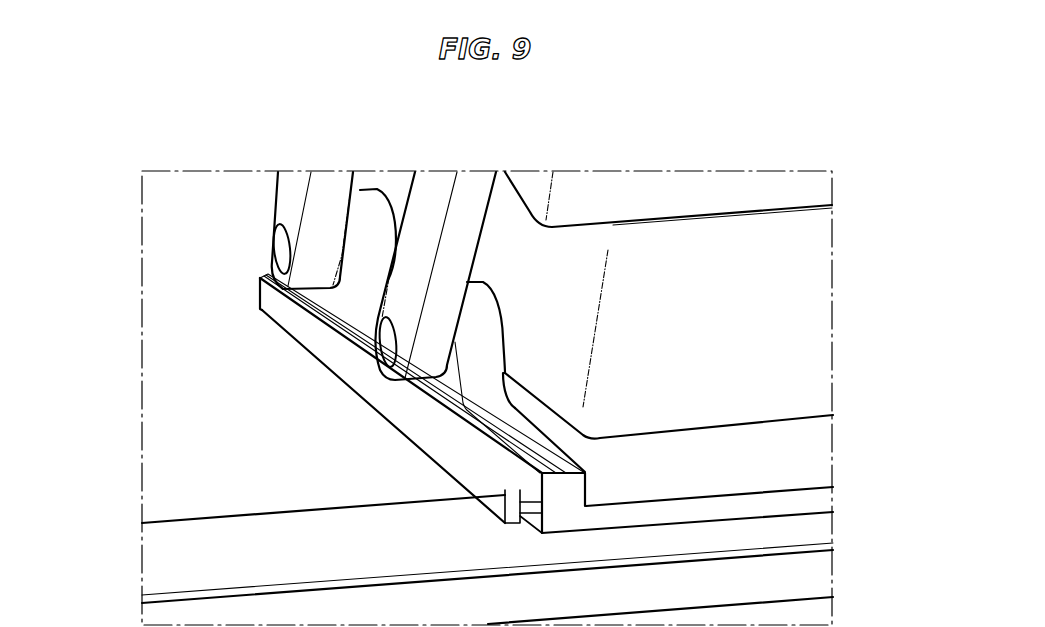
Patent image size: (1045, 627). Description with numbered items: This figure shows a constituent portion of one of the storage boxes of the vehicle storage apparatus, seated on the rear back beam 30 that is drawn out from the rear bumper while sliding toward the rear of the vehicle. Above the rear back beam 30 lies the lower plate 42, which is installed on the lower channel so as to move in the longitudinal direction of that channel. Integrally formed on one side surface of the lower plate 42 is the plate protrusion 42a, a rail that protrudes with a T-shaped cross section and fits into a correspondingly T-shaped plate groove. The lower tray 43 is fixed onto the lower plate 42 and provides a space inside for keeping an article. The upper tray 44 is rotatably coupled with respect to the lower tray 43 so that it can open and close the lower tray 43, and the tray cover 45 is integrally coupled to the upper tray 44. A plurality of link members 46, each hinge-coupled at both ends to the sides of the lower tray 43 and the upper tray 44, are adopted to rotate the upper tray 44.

The rear back beam 30 is at (183, 565).
The lower plate 42 is at (760, 453).
The plate protrusion 42a is at (330, 357).
The lower tray 43 is at (812, 287).
The upper tray 44 is at (690, 192).
The tray cover 45 is at (173, 280).
The link members 46 is at (430, 198).